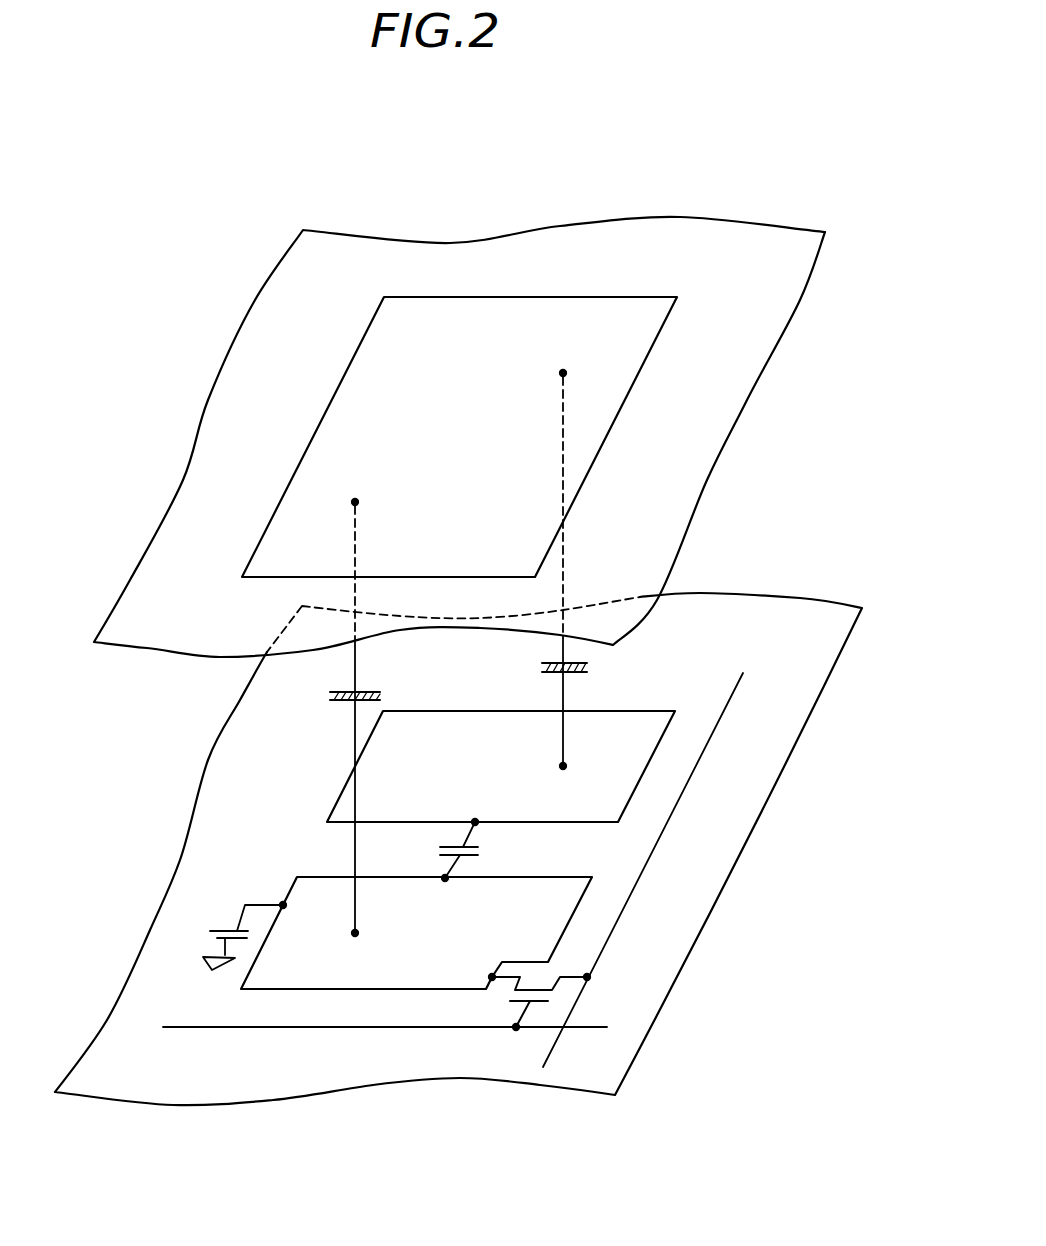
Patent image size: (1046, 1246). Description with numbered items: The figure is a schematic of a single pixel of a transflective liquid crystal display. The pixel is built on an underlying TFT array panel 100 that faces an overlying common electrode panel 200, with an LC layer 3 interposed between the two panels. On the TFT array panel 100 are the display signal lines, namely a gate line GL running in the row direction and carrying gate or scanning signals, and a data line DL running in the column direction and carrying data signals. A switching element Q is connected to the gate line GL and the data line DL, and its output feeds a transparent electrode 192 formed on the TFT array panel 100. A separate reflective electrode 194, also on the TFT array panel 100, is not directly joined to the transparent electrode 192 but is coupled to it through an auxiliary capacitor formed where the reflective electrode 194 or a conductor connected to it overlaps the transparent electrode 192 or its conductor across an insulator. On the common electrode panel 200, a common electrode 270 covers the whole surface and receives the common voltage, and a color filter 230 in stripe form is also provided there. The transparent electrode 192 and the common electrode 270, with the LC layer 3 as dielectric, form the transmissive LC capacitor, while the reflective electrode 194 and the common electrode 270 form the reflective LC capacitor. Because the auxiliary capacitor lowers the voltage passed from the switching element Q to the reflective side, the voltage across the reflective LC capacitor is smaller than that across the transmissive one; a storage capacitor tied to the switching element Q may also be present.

The LC layer 3 is at (143, 749).
The TFT array panel 100 is at (462, 849).
The transparent electrode 192 is at (570, 920).
The reflective electrode 194 is at (648, 763).
The common electrode panel 200 is at (472, 416).
The color filter 230 is at (533, 297).
The common electrode 270 is at (740, 387).
The switching element Q is at (539, 1002).
The gate line GL is at (404, 1033).
The data line DL is at (653, 856).